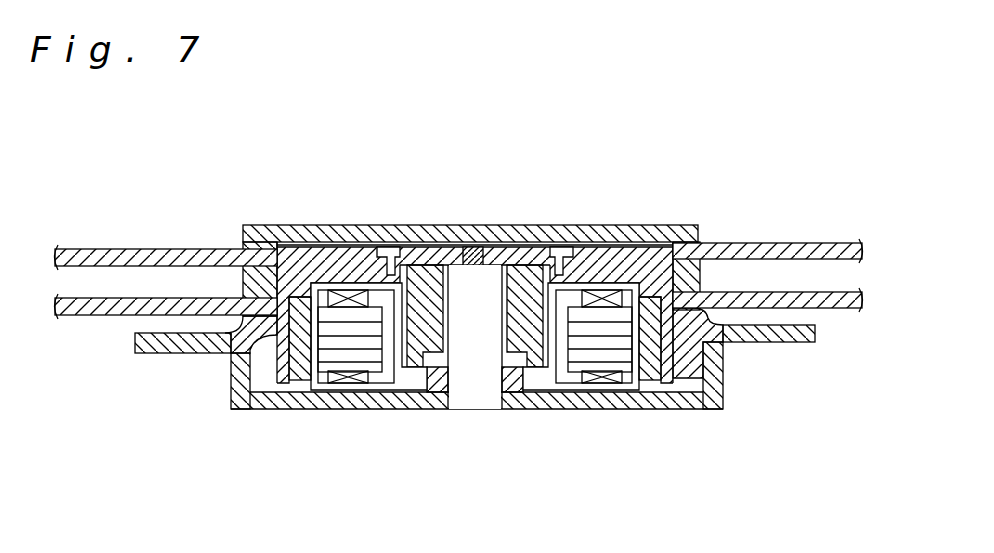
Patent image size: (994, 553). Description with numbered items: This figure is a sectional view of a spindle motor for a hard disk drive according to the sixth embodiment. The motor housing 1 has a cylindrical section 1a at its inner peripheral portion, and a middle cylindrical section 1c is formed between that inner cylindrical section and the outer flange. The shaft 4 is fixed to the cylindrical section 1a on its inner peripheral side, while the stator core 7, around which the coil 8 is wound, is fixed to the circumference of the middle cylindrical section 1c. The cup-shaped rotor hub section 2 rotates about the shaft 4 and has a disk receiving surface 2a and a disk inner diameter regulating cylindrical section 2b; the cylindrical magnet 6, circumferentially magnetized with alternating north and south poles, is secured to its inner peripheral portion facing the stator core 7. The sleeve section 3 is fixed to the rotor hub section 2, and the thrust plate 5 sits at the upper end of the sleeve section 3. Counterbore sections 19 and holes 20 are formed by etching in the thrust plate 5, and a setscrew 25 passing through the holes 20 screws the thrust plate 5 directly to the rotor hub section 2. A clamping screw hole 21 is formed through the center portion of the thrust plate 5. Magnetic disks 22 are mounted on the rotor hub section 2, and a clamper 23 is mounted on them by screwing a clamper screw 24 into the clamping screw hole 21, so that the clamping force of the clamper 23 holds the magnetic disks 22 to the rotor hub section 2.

The motor housing 1 is at (278, 394).
The cylindrical section 1a is at (435, 368).
The middle cylindrical section 1c is at (173, 343).
The rotor hub section 2 is at (653, 246).
The disk receiving surface 2a is at (727, 345).
The disk inner diameter regulating cylindrical section 2b is at (730, 243).
The sleeve section 3 is at (549, 246).
The shaft 4 is at (478, 385).
The thrust plate 5 is at (438, 246).
The magnet 6 is at (652, 372).
The stator core 7 is at (592, 356).
The coil 8 is at (607, 372).
The counterbore sections 19 is at (397, 246).
The holes 20 is at (328, 226).
The clamping screw hole 21 is at (519, 246).
The magnetic disks 22 is at (800, 296).
The clamper 23 is at (611, 246).
The clamper screw 24 is at (473, 247).
The setscrew 25 is at (381, 246).